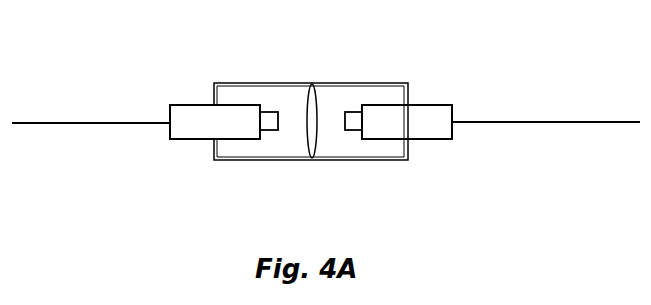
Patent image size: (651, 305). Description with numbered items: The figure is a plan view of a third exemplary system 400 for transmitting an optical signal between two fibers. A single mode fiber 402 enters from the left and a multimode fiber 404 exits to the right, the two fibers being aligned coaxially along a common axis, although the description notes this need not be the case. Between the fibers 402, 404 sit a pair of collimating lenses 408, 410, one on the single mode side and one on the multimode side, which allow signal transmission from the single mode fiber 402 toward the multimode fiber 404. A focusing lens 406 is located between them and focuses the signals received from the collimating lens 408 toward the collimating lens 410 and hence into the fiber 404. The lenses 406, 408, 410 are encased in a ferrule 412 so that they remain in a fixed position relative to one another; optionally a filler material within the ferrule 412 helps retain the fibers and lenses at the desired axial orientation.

The system 400 is at (505, 178).
The single mode fiber 402 is at (140, 120).
The multimode fiber 404 is at (477, 118).
The focusing lens 406 is at (313, 100).
The collimating lens 408 is at (195, 115).
The collimating lens 410 is at (405, 113).
The ferrule 412 is at (344, 172).